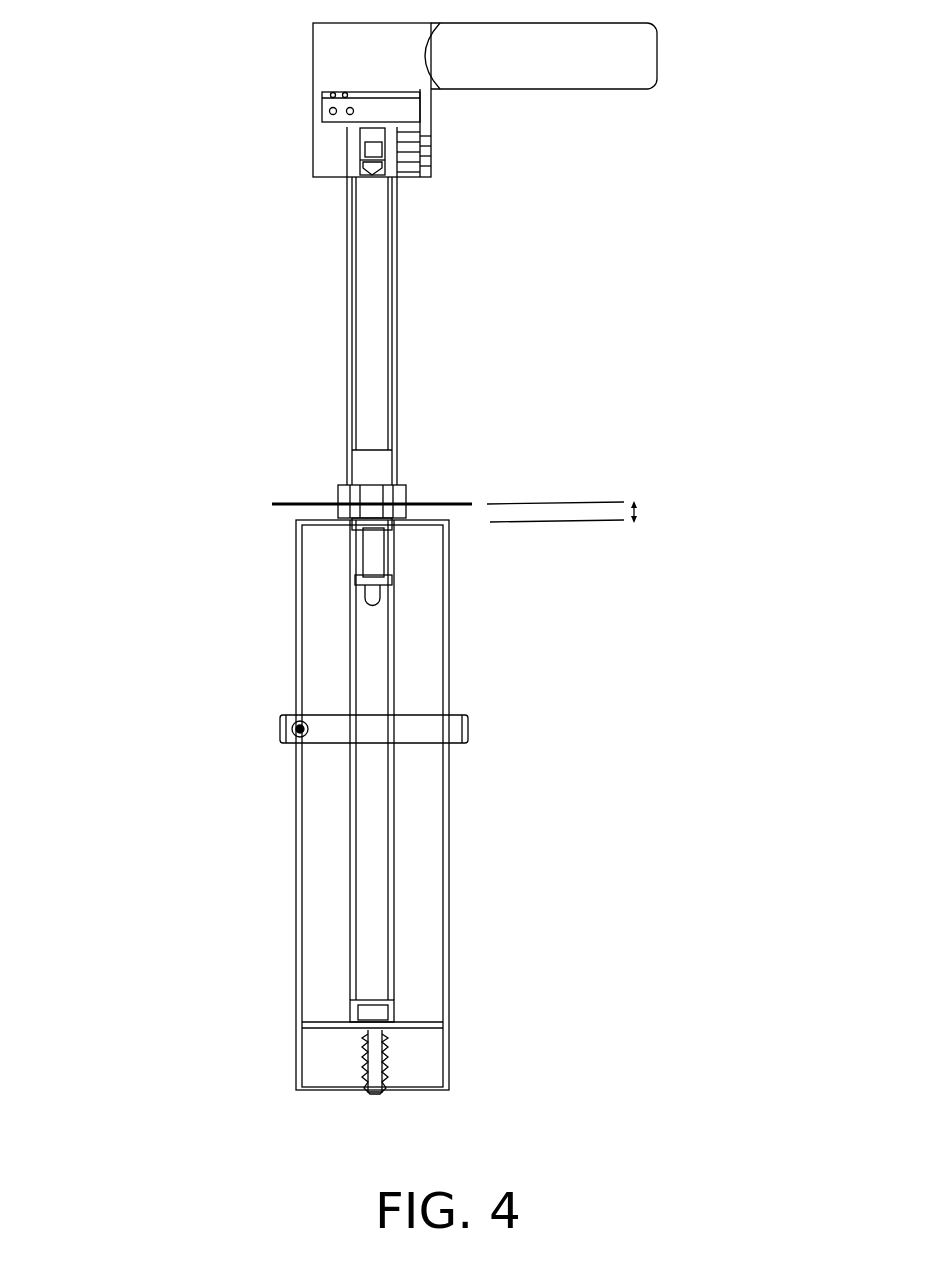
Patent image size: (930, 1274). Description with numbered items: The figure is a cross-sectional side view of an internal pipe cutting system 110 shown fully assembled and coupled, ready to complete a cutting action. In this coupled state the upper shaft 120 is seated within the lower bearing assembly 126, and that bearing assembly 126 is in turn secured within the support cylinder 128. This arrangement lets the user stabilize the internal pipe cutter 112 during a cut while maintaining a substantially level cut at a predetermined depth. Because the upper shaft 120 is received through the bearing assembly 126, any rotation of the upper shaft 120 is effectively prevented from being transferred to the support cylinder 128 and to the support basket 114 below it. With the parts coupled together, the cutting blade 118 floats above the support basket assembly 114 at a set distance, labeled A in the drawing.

The internal pipe cutting system 110 is at (706, 391).
The internal pipe cutter 112 is at (252, 240).
The support basket 114 is at (226, 716).
The cutting blade 118 is at (272, 503).
The upper shaft 120 is at (383, 600).
The lower bearing assembly 126 is at (387, 547).
The support cylinder 128 is at (378, 801).